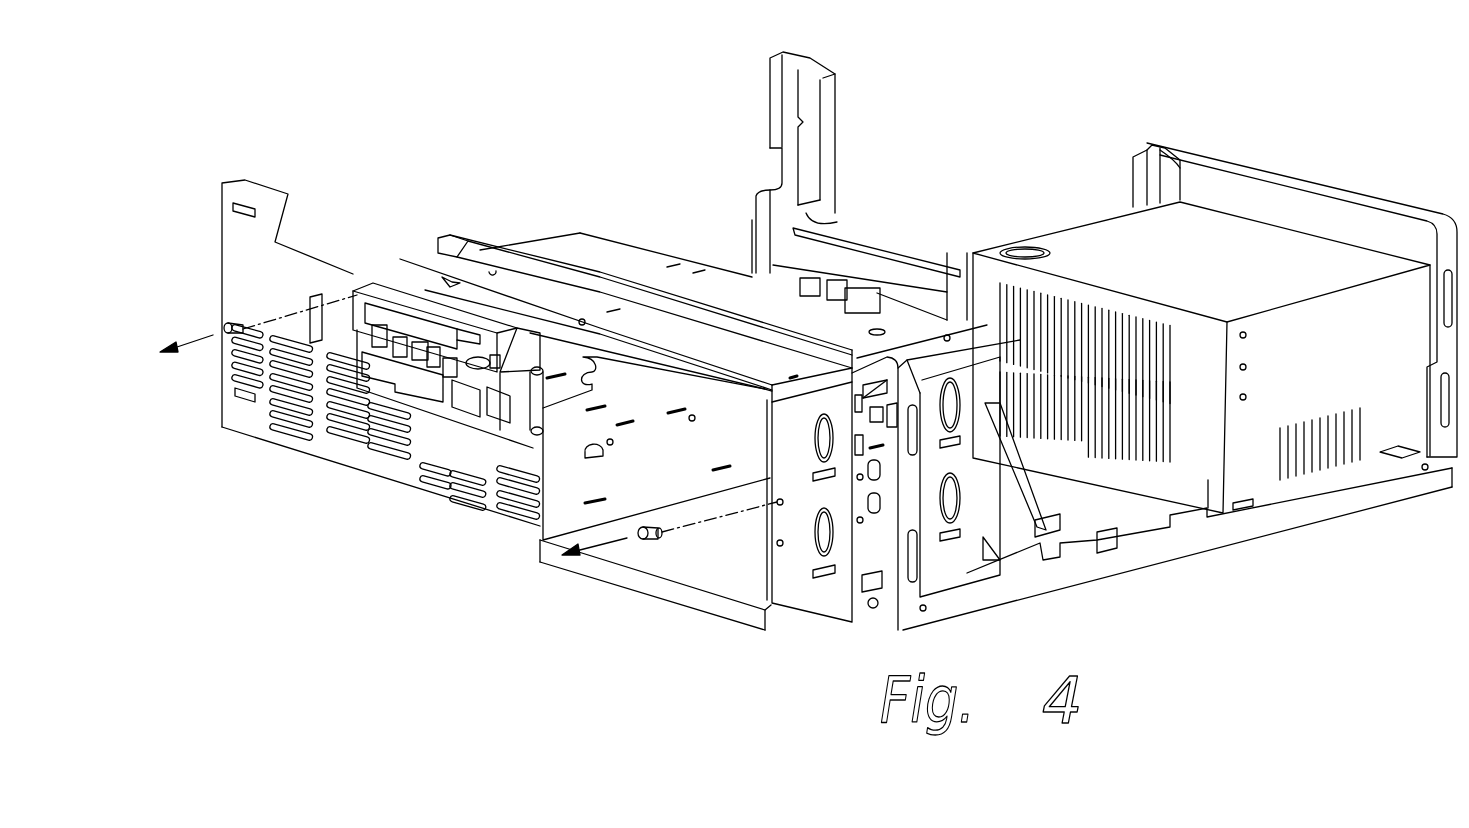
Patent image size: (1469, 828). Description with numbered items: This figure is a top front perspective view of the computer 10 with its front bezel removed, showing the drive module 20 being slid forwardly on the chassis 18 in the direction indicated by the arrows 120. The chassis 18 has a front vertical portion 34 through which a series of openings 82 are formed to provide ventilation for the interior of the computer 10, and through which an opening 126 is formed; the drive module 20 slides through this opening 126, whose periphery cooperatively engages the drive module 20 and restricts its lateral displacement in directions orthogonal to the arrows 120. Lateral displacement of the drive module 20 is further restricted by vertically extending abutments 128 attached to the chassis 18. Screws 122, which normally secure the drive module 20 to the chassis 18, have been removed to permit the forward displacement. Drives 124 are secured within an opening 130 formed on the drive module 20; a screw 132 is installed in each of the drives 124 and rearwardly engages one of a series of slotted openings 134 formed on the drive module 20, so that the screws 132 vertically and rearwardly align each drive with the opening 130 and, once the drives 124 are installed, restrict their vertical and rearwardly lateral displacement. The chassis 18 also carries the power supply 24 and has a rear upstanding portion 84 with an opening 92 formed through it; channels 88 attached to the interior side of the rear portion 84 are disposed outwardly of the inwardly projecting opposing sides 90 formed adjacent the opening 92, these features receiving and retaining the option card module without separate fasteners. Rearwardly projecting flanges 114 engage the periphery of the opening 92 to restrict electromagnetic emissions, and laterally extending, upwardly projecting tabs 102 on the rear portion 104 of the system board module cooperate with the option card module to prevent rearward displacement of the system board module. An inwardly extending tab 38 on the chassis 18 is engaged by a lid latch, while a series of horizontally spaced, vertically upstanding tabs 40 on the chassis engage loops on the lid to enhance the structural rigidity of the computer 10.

The computer 10 is at (519, 78).
The chassis 18 is at (1276, 533).
The drive module 20 is at (704, 618).
The power supply 24 is at (1069, 222).
The front vertical portion 34 is at (215, 227).
The inwardly extending tab 38 is at (1405, 448).
The vertically upstanding tabs 40 is at (1277, 492).
The openings 82 is at (343, 440).
The rear upstanding portion 84 is at (1300, 175).
The channels 88 is at (797, 98).
The inwardly projecting opposing sides 90 is at (834, 103).
The opening 92 is at (932, 158).
The upwardly projecting tabs 102 is at (915, 236).
The rear portion 104 is at (774, 246).
The rearwardly projecting flanges 114 is at (812, 225).
The arrows 120 is at (208, 338).
The screws 122 is at (240, 324).
The drives 124 is at (375, 287).
The opening 126 is at (493, 268).
The vertically extending abutments 128 is at (1097, 503).
The opening 130 is at (407, 297).
The screw 132 is at (530, 374).
The slotted openings 134 is at (584, 356).